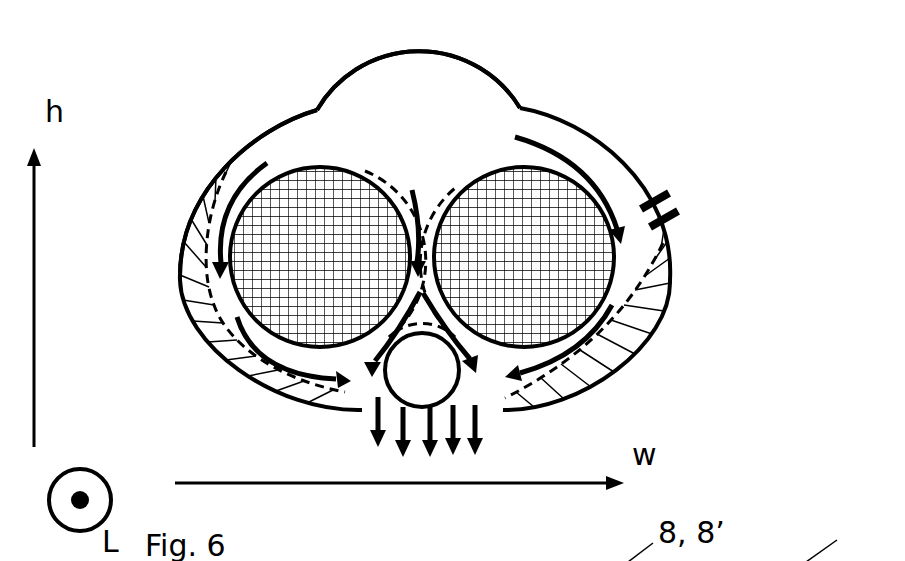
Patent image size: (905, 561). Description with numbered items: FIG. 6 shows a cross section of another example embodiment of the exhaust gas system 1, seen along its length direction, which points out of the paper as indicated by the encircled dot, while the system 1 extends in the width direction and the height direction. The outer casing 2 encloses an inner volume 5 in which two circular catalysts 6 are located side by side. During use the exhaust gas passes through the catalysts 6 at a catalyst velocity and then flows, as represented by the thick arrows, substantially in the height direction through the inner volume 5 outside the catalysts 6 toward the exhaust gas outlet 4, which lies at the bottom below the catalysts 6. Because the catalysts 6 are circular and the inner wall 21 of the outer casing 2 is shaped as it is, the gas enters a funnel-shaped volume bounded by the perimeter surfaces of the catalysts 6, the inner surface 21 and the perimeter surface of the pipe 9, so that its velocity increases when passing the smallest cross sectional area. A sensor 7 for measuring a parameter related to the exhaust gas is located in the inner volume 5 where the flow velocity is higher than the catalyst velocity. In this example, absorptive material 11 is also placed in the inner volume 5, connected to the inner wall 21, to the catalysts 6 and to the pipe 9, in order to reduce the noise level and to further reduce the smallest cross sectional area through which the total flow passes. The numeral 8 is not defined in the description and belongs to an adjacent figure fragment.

The system 1 is at (683, 80).
The outer casing 2 is at (252, 146).
The inner surface of the outer casing 21 is at (248, 195).
The inner volume 5 is at (400, 128).
The catalyst 6 is at (483, 233).
The sensor 7 is at (676, 200).
The pipe 9 is at (392, 396).
The exhaust gas outlet 4 is at (392, 443).
The absorptive material 11 is at (465, 178).
The flow elements 8 is at (667, 532).